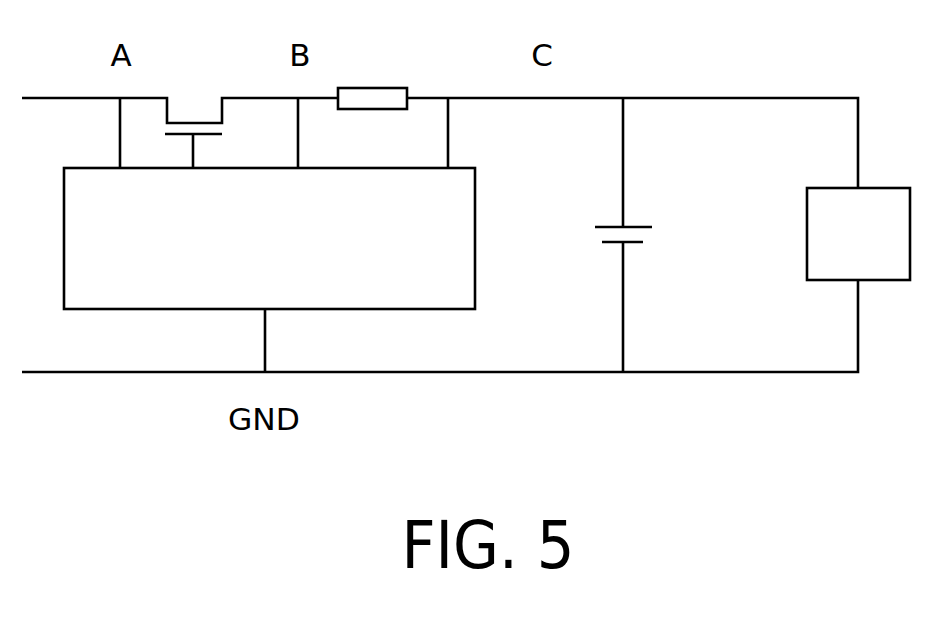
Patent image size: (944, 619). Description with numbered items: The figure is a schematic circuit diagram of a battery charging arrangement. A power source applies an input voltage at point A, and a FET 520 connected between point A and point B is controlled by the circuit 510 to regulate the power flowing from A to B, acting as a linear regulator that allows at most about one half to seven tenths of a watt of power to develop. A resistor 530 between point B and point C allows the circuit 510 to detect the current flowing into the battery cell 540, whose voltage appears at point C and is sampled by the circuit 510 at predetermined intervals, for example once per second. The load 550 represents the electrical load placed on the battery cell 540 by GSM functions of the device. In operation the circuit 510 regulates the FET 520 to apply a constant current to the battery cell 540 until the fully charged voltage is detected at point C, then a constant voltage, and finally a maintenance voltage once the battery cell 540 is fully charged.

The circuit 510 is at (269, 238).
The FET 520 is at (225, 128).
The resistor 530 is at (365, 91).
The battery cell 540 is at (653, 220).
The load 550 is at (835, 282).